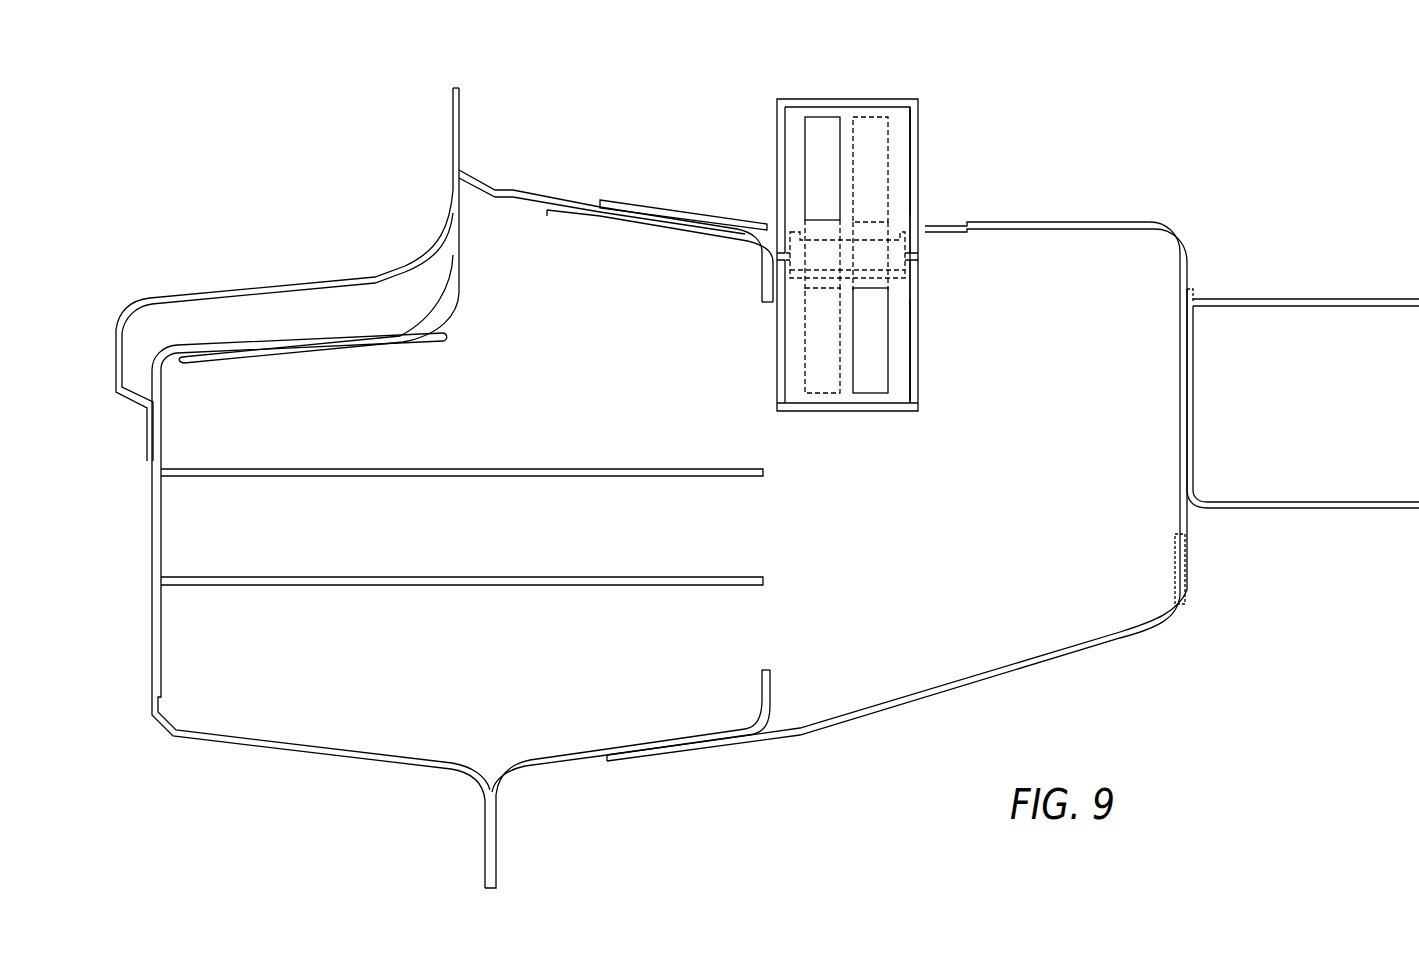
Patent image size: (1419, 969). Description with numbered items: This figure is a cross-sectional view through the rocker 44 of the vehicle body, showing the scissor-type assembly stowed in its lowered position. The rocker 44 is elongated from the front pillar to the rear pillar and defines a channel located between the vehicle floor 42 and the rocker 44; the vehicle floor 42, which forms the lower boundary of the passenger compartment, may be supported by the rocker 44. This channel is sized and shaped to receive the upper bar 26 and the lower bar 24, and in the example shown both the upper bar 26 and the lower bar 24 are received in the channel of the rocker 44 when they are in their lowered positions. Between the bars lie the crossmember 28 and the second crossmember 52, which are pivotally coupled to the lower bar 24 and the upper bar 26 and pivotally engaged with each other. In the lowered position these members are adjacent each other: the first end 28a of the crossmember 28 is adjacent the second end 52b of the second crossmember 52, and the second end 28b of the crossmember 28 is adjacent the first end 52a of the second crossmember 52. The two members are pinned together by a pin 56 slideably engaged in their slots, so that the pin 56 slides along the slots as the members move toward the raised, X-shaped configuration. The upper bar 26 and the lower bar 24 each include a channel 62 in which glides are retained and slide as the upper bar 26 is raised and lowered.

The lower bar 24 is at (862, 412).
The upper bar 26 is at (858, 100).
The crossmember 28 is at (795, 228).
The first end of the crossmember 28a is at (824, 116).
The second end of the crossmember 28b is at (820, 396).
The vehicle floor 42 is at (1287, 297).
The rocker 44 is at (1082, 198).
The second crossmember 52 is at (905, 222).
The first end of the second crossmember 52a is at (897, 100).
The second end of the second crossmember 52b is at (895, 415).
The pin 56 is at (920, 258).
The channel 62 is at (897, 120).